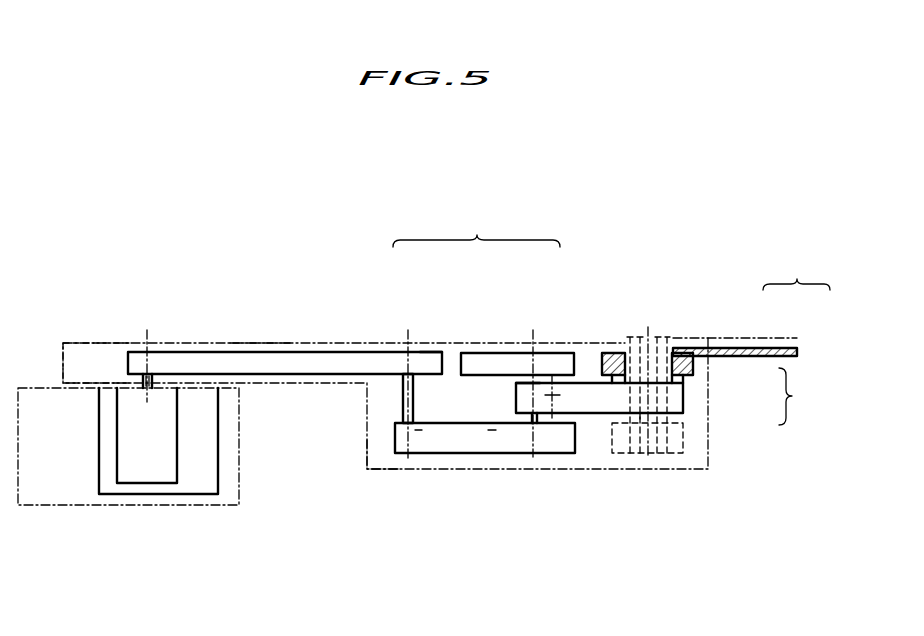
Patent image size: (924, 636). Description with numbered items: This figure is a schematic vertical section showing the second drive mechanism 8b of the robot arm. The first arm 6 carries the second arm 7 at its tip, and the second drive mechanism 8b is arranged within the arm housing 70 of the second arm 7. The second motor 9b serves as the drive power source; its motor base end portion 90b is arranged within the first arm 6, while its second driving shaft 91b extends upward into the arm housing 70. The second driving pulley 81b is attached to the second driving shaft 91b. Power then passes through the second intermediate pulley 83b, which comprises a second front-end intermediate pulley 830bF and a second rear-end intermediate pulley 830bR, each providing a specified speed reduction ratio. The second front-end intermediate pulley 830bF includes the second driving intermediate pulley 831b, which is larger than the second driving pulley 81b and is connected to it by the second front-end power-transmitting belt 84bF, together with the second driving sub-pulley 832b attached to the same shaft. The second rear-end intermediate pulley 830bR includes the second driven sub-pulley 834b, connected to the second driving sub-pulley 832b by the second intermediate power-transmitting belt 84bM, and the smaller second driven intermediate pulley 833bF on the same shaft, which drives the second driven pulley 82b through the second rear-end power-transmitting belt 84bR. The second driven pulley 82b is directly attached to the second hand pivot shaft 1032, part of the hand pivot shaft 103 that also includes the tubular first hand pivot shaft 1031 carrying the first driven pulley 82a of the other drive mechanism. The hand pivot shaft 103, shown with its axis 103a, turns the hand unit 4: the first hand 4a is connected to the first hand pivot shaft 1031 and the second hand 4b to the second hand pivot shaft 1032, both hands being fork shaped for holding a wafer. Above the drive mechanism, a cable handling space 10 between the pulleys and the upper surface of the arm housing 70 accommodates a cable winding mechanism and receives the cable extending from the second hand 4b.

The hand unit 4 is at (796, 272).
The first hand 4a is at (775, 337).
The second hand 4b is at (798, 352).
The first arm 6 is at (52, 505).
The second arm 7 is at (218, 313).
The second drive mechanism 8b is at (383, 441).
The second motor 9b is at (145, 483).
The cable handling space 10 is at (483, 352).
The arm housing 70 is at (258, 341).
The second driving pulley 81b is at (167, 365).
The first driven pulley 82a is at (683, 437).
The second driven pulley 82b is at (610, 398).
The second intermediate pulley 83b is at (476, 229).
The second front-end power-transmitting belt 84bF is at (302, 372).
The second intermediate power-transmitting belt 84bM is at (460, 442).
The second rear-end power-transmitting belt 84bR is at (590, 403).
The motor base end portion 90b is at (177, 458).
The second driving shaft 91b is at (141, 382).
The hand pivot shaft 103 is at (806, 396).
The holder guide pins 103a is at (650, 379).
The first hand pivot shaft 1031 is at (665, 418).
The second hand pivot shaft 1032 is at (695, 363).
The second front-end intermediate pulley 830bF is at (435, 352).
The second rear-end intermediate pulley 830bR is at (526, 383).
The second driving intermediate pulley 831b is at (372, 370).
The second driving sub-pulley 832b is at (418, 428).
The second driven intermediate pulley 833bF is at (552, 402).
The second driven sub-pulley 834b is at (492, 428).